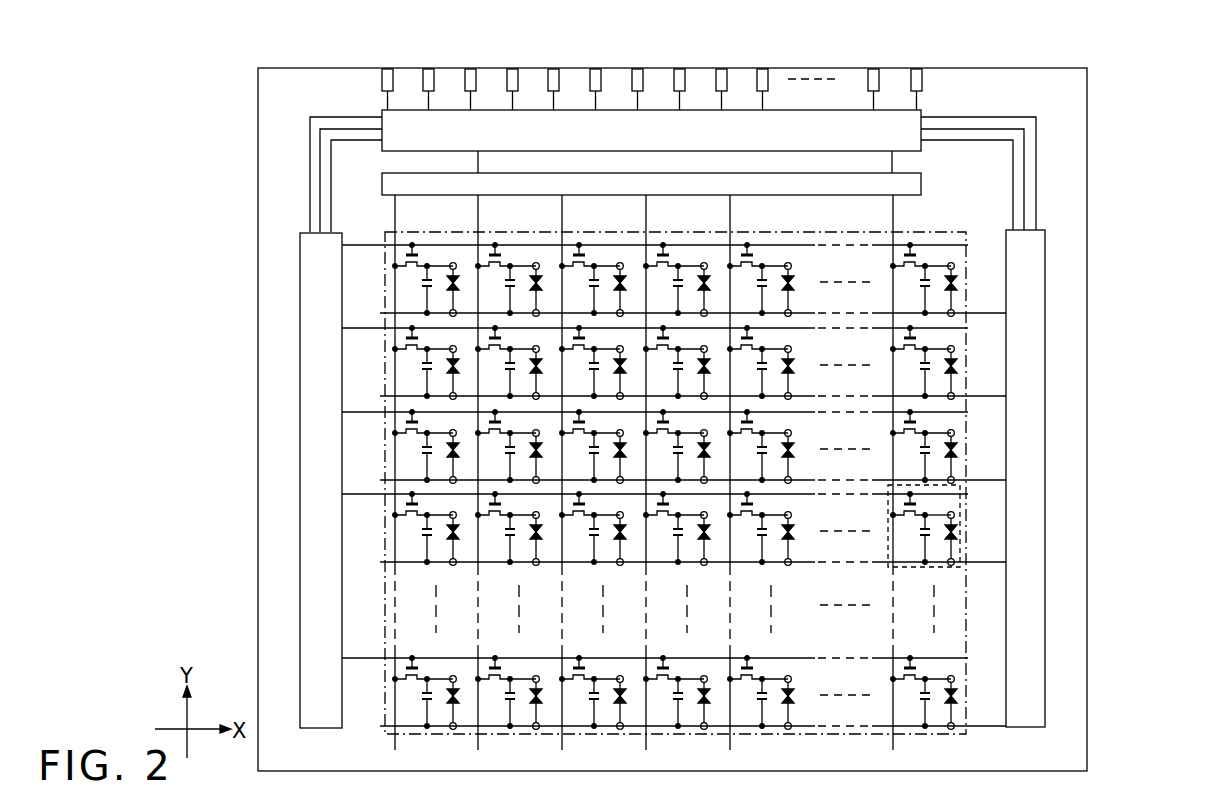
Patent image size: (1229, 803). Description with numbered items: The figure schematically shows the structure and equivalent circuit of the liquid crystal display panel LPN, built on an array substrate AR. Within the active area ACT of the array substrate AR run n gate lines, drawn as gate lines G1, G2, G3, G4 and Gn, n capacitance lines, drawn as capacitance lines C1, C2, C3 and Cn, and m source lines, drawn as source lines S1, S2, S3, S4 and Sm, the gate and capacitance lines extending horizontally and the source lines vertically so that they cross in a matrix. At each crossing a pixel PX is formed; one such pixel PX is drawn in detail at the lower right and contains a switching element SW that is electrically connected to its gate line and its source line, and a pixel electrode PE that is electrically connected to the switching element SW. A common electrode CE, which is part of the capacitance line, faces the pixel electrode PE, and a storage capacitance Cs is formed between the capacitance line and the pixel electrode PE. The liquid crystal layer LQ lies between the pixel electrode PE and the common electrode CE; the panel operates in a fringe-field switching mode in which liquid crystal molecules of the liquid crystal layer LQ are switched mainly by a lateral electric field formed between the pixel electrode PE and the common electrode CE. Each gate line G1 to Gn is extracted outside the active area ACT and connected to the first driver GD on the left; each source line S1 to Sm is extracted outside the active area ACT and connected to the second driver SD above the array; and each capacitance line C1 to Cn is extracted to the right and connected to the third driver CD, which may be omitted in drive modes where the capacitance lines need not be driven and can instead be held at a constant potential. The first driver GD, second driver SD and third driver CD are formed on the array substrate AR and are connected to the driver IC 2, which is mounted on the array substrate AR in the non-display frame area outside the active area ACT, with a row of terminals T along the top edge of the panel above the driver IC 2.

The liquid crystal display panel LPN is at (1135, 68).
The array substrate AR is at (1075, 187).
The terminals T is at (915, 68).
The driver IC 2 is at (921, 111).
The second driver SD is at (921, 184).
The first driver GD is at (299, 597).
The third driver CD is at (1046, 282).
The active area ACT is at (966, 344).
The source line S1 is at (398, 212).
The source line S2 is at (481, 212).
The source line S3 is at (565, 212).
The source line S4 is at (649, 212).
The source line Sm is at (896, 212).
The gate line G1 is at (357, 243).
The gate line G2 is at (357, 327).
The gate line G3 is at (357, 411).
The gate line G4 is at (357, 493).
The gate line Gn is at (359, 657).
The capacitance line C1 is at (985, 311).
The capacitance line C2 is at (985, 394).
The capacitance line C3 is at (985, 478).
The capacitance line Cn is at (987, 724).
The pixel PX is at (963, 572).
The switching element SW is at (886, 509).
The storage capacitance Cs is at (906, 538).
The pixel electrode PE is at (955, 513).
The liquid crystal layer LQ is at (958, 532).
The common electrode CE is at (955, 561).